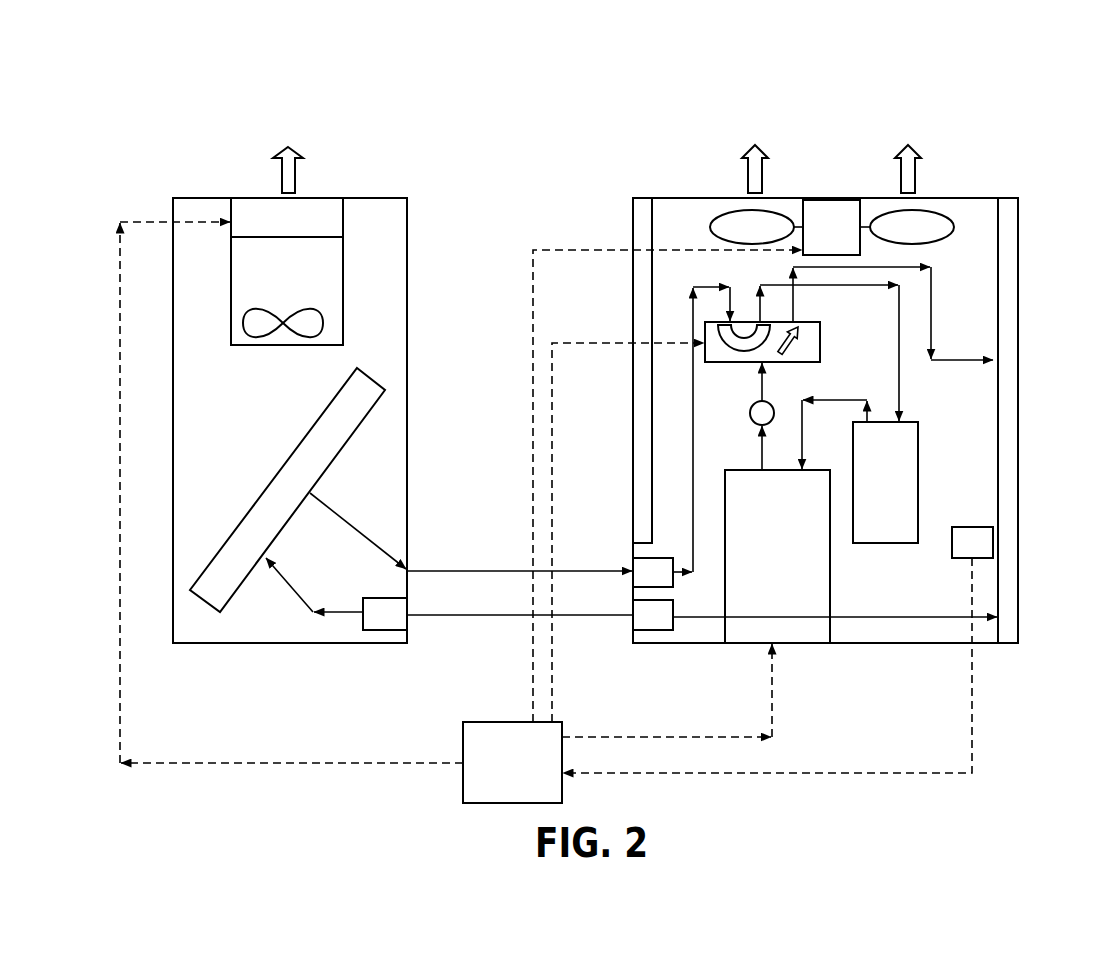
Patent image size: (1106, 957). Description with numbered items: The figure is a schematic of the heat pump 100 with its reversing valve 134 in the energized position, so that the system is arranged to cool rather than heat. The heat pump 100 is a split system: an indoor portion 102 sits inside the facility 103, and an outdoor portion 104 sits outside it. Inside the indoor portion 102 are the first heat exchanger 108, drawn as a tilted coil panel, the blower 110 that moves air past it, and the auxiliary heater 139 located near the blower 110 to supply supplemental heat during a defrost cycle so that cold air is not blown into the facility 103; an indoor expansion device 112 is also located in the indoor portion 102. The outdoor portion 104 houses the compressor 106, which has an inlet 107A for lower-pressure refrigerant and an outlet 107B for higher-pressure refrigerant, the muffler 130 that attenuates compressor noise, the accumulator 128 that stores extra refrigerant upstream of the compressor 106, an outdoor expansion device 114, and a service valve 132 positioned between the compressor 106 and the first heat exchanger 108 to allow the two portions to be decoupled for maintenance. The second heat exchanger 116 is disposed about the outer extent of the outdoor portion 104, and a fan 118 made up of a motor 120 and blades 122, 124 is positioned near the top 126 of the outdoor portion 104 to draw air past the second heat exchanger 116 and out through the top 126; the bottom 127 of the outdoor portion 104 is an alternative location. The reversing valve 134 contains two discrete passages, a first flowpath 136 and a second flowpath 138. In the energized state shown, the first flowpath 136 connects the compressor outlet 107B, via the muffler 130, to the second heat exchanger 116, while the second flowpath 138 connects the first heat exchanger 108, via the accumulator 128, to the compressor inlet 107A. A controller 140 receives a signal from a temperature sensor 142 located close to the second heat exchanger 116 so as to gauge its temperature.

The heat pump 100 is at (209, 72).
The indoor portion 102 is at (374, 197).
The facility 103 is at (298, 118).
The outdoor portion 104 is at (978, 197).
The compressor 106 is at (791, 551).
The inlet 107A is at (805, 470).
The outlet 107B is at (760, 470).
The first heat exchanger 108 is at (380, 373).
The blower 110 is at (231, 345).
The indoor expansion device 112 is at (399, 622).
The outdoor expansion device 114 is at (667, 623).
The second heat exchanger 116 is at (1019, 608).
The fan 118 is at (951, 245).
The motor 120 is at (846, 235).
The blade 122 is at (766, 235).
The blade 124 is at (926, 235).
The top 126 is at (705, 197).
The bottom 127 is at (860, 644).
The accumulator 128 is at (900, 491).
The muffler 130 is at (773, 398).
The service valve 132 is at (667, 581).
The reversing valve 134 is at (821, 337).
The first flowpath 136 is at (800, 347).
The second flowpath 138 is at (748, 332).
The auxiliary heater 139 is at (305, 233).
The controller 140 is at (527, 770).
The temperature sensor 142 is at (986, 550).